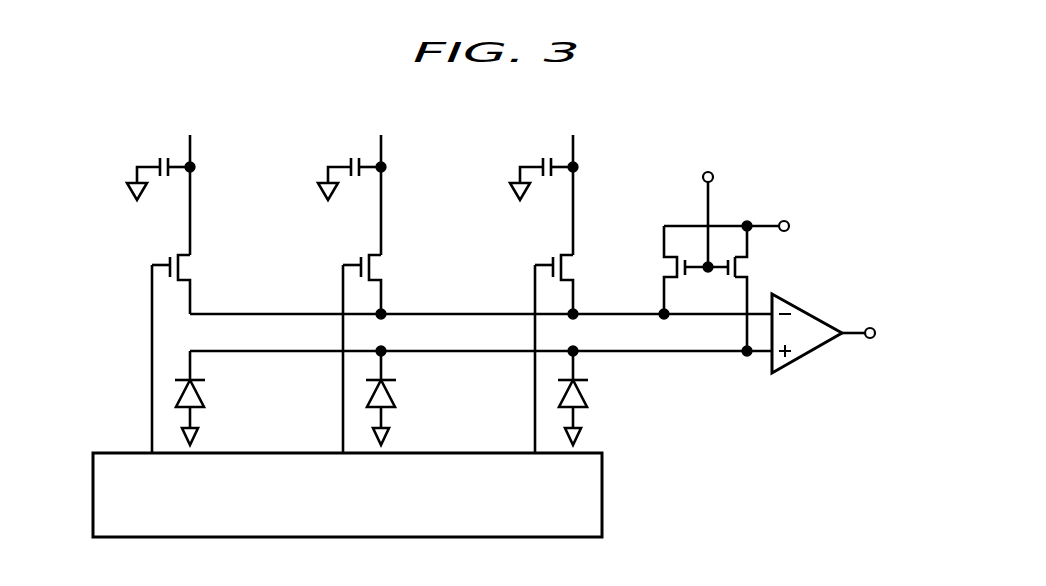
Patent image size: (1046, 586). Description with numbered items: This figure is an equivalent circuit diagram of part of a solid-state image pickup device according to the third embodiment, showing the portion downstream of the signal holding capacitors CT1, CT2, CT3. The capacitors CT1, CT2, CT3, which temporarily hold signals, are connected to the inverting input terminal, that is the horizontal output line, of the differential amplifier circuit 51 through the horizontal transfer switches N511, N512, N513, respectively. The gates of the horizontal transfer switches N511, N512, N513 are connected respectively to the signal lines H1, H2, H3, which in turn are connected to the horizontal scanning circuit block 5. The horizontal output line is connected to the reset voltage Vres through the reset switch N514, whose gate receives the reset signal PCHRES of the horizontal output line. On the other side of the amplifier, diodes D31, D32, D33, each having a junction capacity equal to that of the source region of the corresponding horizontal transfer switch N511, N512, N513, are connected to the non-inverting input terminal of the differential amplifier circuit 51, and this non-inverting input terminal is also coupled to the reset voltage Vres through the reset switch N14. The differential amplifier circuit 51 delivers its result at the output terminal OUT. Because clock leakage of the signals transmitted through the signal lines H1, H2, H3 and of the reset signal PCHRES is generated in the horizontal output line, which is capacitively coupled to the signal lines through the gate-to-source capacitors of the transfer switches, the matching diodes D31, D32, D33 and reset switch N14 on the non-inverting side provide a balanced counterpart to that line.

The signal holding capacitor CT1 is at (161, 188).
The signal holding capacitor CT2 is at (352, 188).
The signal holding capacitor CT3 is at (544, 188).
The horizontal transfer switch N511 is at (198, 283).
The horizontal transfer switch N512 is at (390, 285).
The horizontal transfer switch N513 is at (582, 285).
The reset switch N514 is at (693, 272).
The reset switch N14 is at (761, 291).
The diode D31 is at (212, 398).
The diode D32 is at (404, 395).
The diode D33 is at (596, 395).
The signal line H1 is at (150, 377).
The signal line H2 is at (343, 377).
The signal line H3 is at (535, 377).
The reset signal PCHRES is at (707, 203).
The reset voltage Vres is at (754, 227).
The output terminal OUT is at (886, 335).
The differential amplifier circuit 51 is at (806, 354).
The horizontal scanning circuit block 5 is at (602, 473).